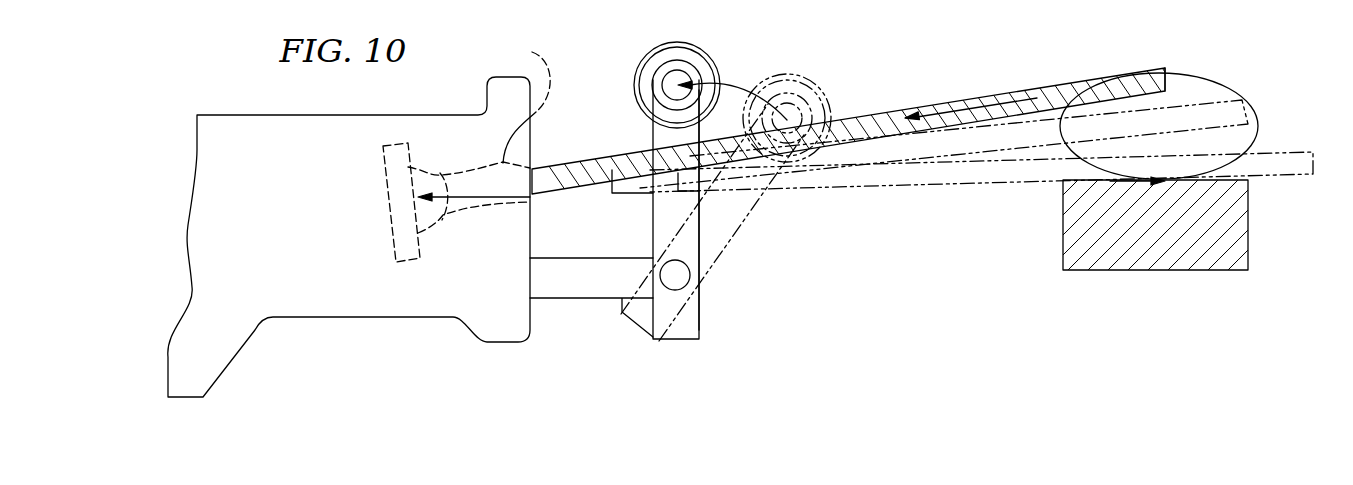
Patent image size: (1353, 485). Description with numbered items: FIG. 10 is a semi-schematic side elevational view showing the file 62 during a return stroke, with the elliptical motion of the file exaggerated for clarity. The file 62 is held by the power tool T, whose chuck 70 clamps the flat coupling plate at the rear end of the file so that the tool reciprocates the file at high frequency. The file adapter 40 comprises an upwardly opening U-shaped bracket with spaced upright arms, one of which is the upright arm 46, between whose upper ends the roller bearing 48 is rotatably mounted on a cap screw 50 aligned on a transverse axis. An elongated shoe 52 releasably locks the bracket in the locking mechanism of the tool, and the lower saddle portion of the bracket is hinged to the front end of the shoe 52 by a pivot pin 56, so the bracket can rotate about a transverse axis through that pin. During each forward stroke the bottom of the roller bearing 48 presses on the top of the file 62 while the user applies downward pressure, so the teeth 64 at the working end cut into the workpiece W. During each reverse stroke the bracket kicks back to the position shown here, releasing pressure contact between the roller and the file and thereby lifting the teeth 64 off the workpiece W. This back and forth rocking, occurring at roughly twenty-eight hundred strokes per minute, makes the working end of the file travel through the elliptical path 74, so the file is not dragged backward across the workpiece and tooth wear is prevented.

The power tool T is at (280, 128).
The chuck 70 is at (532, 52).
The shoe 52 is at (608, 296).
The file adapter 40 is at (636, 220).
The upright arm 46 is at (692, 233).
The pivot pin 56 is at (677, 276).
The roller bearing 48 is at (660, 44).
The cap screw 50 is at (678, 78).
The file 62 is at (994, 84).
The teeth 64 is at (1176, 72).
The elliptical path 74 is at (1243, 88).
The workpiece W is at (1167, 245).